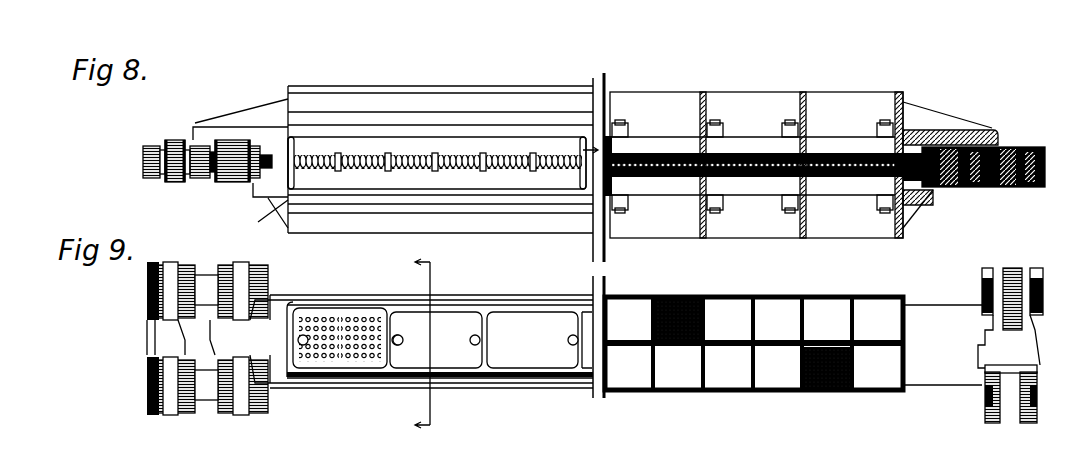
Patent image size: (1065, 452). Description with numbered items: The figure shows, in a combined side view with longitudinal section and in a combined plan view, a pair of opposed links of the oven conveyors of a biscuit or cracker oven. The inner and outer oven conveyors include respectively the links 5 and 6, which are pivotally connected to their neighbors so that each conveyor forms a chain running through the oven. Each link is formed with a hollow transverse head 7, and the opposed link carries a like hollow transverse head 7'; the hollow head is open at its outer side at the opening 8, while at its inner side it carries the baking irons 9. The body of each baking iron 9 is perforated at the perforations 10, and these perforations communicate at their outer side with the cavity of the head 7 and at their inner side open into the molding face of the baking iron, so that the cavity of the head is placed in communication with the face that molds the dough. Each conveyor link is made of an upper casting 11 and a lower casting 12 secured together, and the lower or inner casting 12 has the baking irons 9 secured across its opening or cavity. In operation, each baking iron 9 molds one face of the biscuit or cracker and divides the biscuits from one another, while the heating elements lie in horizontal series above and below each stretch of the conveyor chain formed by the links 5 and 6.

In FIG. 8, the link 5 is at (288, 88).
In FIG. 9, the link 5 is at (287, 385).
In FIG. 8, the link 6 is at (258, 222).
In FIG. 9, the link 6 is at (900, 390).
In FIG. 8, the hollow transverse head 7 is at (921, 154).
In FIG. 8, the hollow transverse head 7' is at (765, 179).
In FIG. 9, the hollow transverse head 7' is at (491, 340).
In FIG. 8, the opening 8 is at (790, 95).
In FIG. 9, the opening 8 is at (690, 392).
In FIG. 8, the baking irons 9 is at (505, 178).
In FIG. 9, the baking irons 9 is at (405, 318).
In FIG. 8, the perforations 10 is at (648, 150).
In FIG. 9, the perforations 10 is at (358, 322).
In FIG. 8, the upper casting 11 is at (987, 128).
In FIG. 8, the lower casting 12 is at (906, 130).